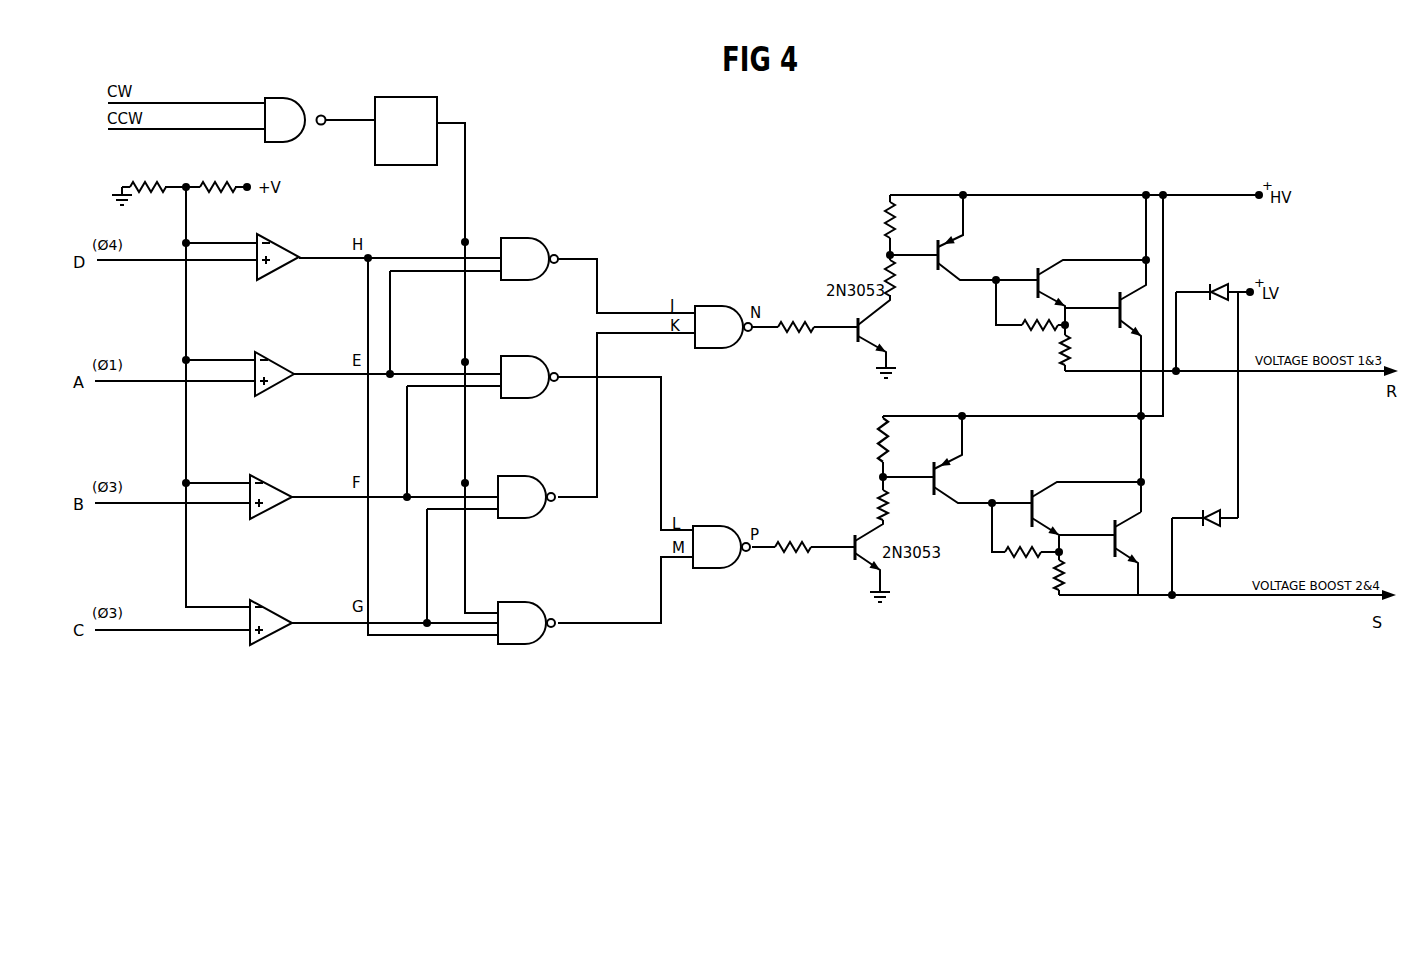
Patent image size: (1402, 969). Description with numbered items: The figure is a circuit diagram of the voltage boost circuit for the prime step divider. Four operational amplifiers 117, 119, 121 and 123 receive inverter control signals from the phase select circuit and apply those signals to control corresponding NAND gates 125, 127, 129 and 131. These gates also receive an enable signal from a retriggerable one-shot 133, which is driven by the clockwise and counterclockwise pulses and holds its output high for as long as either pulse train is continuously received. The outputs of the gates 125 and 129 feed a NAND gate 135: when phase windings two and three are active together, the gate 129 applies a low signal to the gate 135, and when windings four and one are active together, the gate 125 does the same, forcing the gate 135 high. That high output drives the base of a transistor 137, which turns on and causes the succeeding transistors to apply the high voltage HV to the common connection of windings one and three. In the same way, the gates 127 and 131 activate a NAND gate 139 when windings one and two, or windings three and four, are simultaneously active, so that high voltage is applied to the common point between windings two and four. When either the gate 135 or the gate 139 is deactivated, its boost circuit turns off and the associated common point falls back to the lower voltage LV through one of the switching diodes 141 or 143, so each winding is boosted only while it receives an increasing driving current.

The operational amplifier 117 is at (283, 239).
The operational amplifier 119 is at (276, 358).
The operational amplifier 121 is at (284, 482).
The operational amplifier 123 is at (283, 596).
The NAND gate 125 is at (544, 240).
The NAND gate 127 is at (544, 358).
The NAND gate 129 is at (540, 478).
The NAND gate 131 is at (539, 604).
The retriggerable one-shot 133 is at (437, 111).
The NAND gate 135 is at (733, 346).
The transistor 137 is at (868, 331).
The NAND gate 139 is at (733, 567).
The switching diode 141 is at (1216, 284).
The switching diode 143 is at (1222, 524).